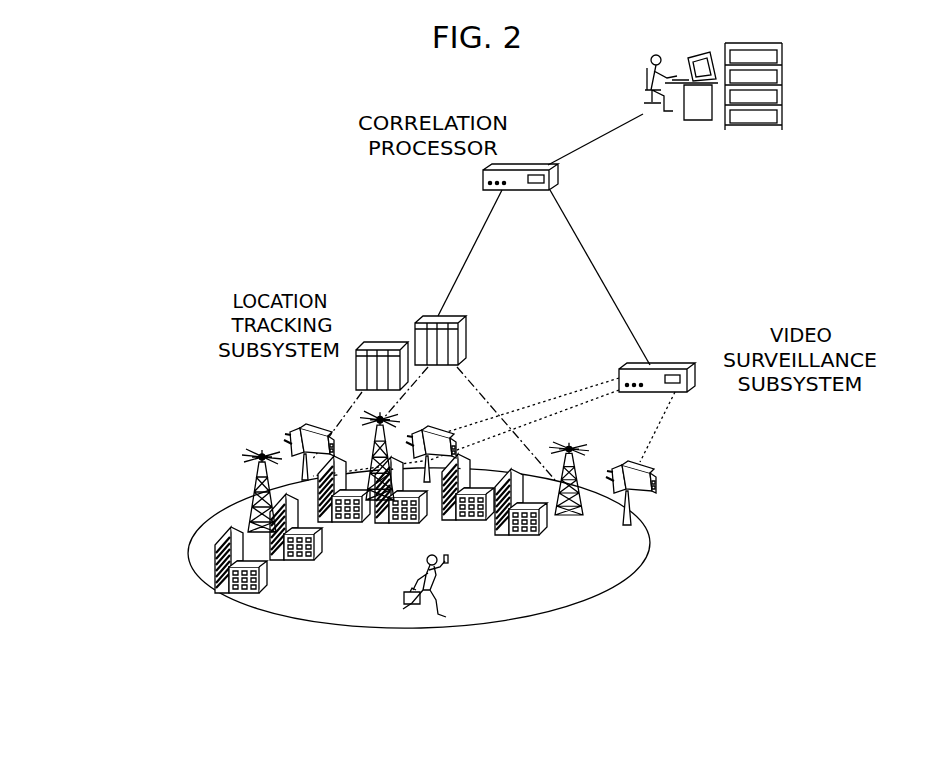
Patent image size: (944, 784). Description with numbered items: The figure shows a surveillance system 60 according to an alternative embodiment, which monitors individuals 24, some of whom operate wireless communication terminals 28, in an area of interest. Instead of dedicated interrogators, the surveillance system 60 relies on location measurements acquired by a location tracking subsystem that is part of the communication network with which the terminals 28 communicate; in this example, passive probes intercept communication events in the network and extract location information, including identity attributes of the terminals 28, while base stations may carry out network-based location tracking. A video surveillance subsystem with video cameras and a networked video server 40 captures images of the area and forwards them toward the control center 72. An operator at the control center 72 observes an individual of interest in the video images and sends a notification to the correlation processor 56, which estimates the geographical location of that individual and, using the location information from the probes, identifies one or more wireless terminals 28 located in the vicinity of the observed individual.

The surveillance system 60 is at (192, 118).
The control center 72 is at (784, 92).
The correlation processor 56 is at (482, 180).
The networked video server 40 is at (657, 367).
The individuals 24 is at (414, 574).
The wireless communication terminals 28 is at (446, 570).